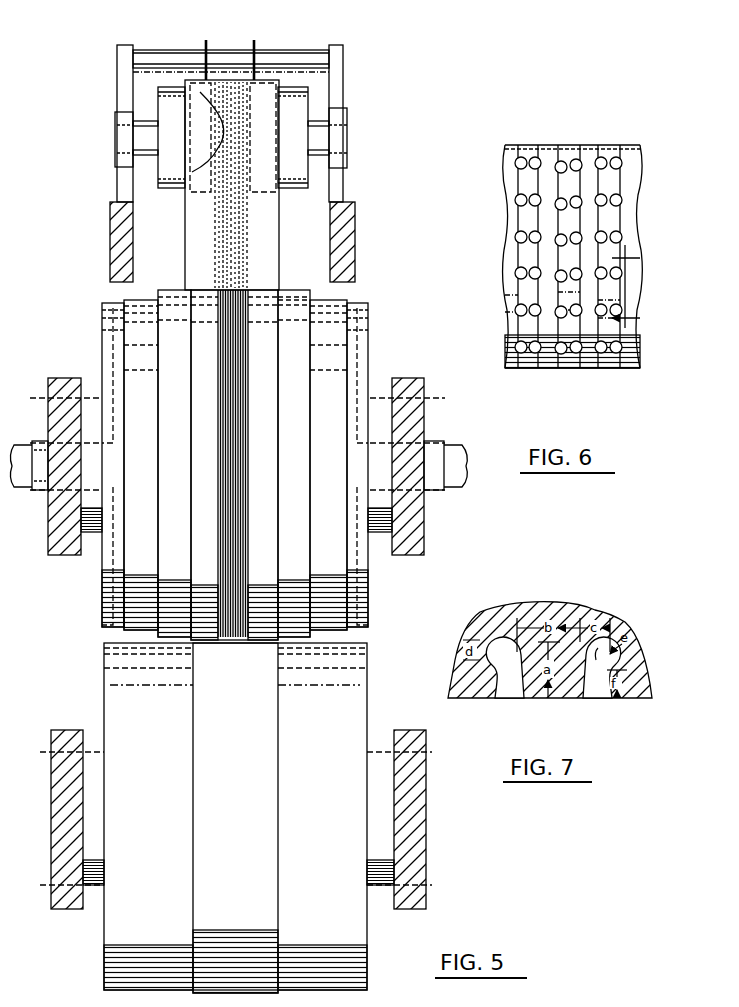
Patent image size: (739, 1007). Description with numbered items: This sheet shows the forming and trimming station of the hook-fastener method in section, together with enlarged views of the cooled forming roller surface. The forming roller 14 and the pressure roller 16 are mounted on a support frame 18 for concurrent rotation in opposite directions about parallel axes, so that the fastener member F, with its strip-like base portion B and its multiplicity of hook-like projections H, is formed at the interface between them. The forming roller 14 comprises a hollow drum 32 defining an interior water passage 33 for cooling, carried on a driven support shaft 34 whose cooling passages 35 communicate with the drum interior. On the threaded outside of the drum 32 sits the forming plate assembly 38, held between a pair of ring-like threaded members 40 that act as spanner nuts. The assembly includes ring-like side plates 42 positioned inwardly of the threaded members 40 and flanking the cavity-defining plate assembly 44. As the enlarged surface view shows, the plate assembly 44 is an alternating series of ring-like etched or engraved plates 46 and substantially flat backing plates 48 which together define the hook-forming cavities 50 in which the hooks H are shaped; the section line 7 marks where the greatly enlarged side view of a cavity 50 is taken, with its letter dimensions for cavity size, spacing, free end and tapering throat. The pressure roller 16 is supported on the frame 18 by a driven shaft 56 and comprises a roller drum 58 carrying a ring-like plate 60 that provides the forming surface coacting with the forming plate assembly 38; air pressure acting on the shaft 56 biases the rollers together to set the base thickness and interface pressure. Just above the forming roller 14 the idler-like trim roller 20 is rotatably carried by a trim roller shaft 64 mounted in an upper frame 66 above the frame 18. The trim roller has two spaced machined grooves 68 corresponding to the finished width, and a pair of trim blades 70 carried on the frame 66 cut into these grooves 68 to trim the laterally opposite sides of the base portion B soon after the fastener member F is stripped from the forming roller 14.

In FIG. 6, the section line 7— 7 is at (629, 286).
In FIG. 5, the first forming roller 14 is at (372, 318).
In FIG. 5, the second pressure roller 16 is at (374, 655).
In FIG. 5, the support frame 18 is at (110, 218).
In FIG. 5, the trim roller 20 is at (170, 190).
In FIG. 5, the hollow drum 32 is at (342, 297).
In FIG. 5, the interior water passage 33 is at (358, 340).
In FIG. 5, the driven support shaft 34 is at (93, 535).
In FIG. 5, the cooling passages 35 is at (55, 490).
In FIG. 5, the forming plate assembly 38 is at (285, 380).
In FIG. 5, the ring-like threaded members 40 is at (173, 418).
In FIG. 5, the ring-like side plates 42 is at (206, 465).
In FIG. 5, the cavity-defining plate assembly 44 is at (252, 430).
In FIG. 6, the cavity-defining plate assembly 44 is at (612, 134).
In FIG. 6, the etched or engraved plates 46 is at (527, 372).
In FIG. 7, the etched or engraved plates 46 is at (605, 613).
In FIG. 6, the backing plates 48 is at (632, 312).
In FIG. 6, the hook-forming cavities 50 is at (530, 170).
In FIG. 7, the hook-forming cavities 50 is at (508, 698).
In FIG. 5, the driven shaft 56 is at (97, 890).
In FIG. 5, the roller drum 58 is at (360, 685).
In FIG. 5, the ring-like plate 60 is at (265, 745).
In FIG. 5, the trim roller shaft 64 is at (144, 121).
In FIG. 5, the frame 66 is at (345, 88).
In FIG. 5, the machined grooves 68 is at (205, 140).
In FIG. 5, the trim blades 70 is at (206, 46).
In FIG. 5, the fastener member F is at (282, 232).
In FIG. 5, the hook-like projections H is at (252, 248).
In FIG. 5, the base portion B is at (272, 270).